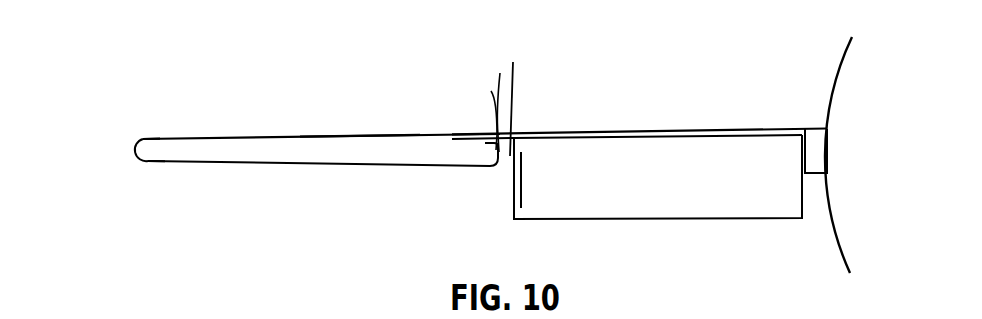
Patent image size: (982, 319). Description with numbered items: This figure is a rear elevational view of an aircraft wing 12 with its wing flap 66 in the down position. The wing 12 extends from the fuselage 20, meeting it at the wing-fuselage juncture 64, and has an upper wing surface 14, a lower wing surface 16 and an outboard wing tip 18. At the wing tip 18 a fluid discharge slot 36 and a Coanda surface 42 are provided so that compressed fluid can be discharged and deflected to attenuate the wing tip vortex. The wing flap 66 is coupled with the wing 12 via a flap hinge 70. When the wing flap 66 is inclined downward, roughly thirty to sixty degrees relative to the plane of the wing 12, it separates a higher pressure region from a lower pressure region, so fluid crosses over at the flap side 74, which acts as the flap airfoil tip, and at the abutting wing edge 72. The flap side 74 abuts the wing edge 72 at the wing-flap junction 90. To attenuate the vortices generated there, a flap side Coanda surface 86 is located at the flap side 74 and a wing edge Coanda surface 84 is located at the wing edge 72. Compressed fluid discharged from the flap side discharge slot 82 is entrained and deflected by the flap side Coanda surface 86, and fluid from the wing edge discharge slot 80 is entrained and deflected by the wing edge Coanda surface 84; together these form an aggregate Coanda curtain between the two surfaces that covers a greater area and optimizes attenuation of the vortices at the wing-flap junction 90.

The wing 12 is at (278, 136).
The upper wing surface 14 is at (346, 135).
The lower wing surface 16 is at (350, 166).
The wing tip 18 is at (142, 147).
The fuselage 20 is at (850, 73).
The fluid discharge slot 36 is at (146, 137).
The Coanda surface 42 is at (142, 156).
The wing-fuselage juncture 64 is at (829, 140).
The wing flap 66 is at (665, 220).
The flap hinge 70 is at (540, 132).
The wing edge 72 is at (499, 79).
The flap side 74 is at (512, 189).
The wing edge discharge slot 80 is at (494, 132).
The flap side discharge slot 82 is at (524, 160).
The wing edge Coanda surface 84 is at (491, 93).
The flap side Coanda surface 86 is at (518, 200).
The wing-flap junction 90 is at (512, 96).